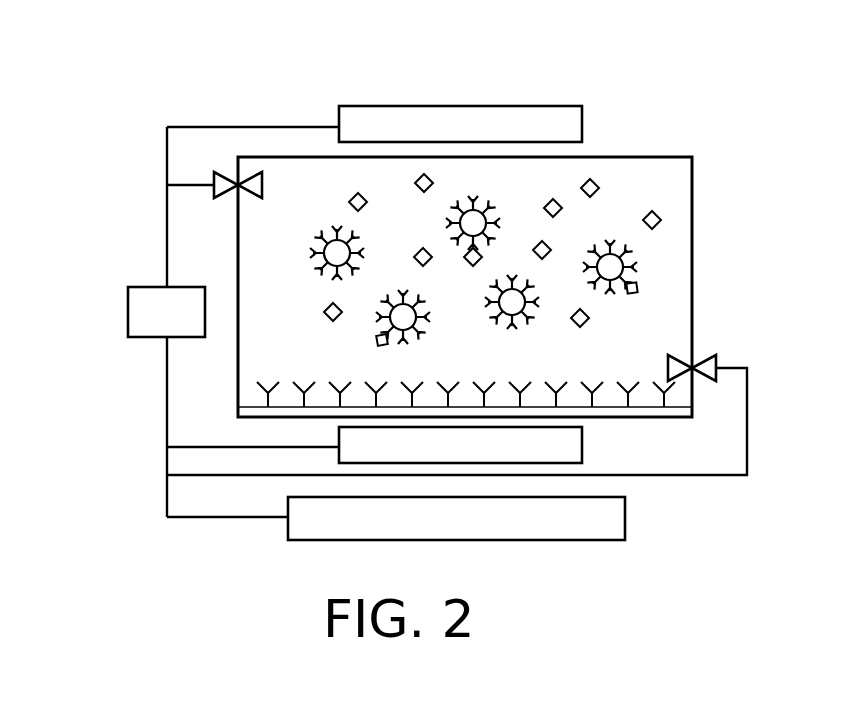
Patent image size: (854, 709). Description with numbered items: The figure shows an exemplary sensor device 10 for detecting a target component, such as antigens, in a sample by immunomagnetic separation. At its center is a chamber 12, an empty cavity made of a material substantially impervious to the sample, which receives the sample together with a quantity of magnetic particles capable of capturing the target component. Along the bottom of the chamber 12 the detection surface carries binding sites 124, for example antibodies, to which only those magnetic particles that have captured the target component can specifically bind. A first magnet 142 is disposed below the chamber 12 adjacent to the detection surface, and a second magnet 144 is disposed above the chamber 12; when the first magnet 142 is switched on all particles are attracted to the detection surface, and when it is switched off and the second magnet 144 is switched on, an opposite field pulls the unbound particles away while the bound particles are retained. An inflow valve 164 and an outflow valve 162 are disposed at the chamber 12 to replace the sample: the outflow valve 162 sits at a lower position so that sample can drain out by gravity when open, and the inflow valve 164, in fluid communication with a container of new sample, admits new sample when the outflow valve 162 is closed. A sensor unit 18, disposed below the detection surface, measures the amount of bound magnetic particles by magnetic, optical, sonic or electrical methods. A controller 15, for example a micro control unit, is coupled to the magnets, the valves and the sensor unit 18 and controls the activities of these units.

The sensor device 10 is at (100, 113).
The chamber 12 is at (690, 188).
The controller 15 is at (181, 323).
The sensor unit 18 is at (472, 532).
The binding sites 124 is at (624, 392).
The first magnet 142 is at (484, 456).
The second magnet 144 is at (484, 135).
The outflow valve 162 is at (709, 352).
The inflow valve 164 is at (221, 198).